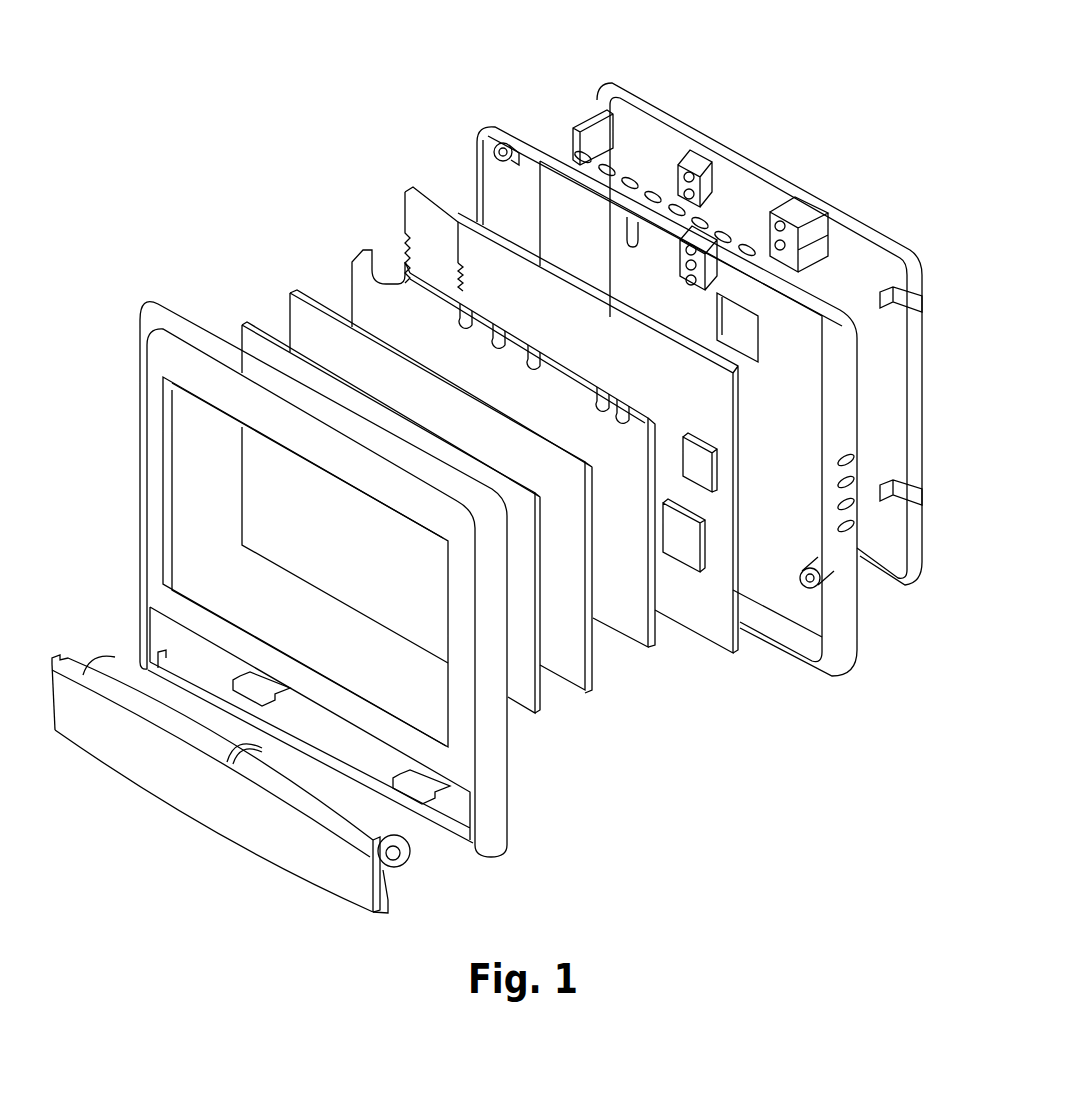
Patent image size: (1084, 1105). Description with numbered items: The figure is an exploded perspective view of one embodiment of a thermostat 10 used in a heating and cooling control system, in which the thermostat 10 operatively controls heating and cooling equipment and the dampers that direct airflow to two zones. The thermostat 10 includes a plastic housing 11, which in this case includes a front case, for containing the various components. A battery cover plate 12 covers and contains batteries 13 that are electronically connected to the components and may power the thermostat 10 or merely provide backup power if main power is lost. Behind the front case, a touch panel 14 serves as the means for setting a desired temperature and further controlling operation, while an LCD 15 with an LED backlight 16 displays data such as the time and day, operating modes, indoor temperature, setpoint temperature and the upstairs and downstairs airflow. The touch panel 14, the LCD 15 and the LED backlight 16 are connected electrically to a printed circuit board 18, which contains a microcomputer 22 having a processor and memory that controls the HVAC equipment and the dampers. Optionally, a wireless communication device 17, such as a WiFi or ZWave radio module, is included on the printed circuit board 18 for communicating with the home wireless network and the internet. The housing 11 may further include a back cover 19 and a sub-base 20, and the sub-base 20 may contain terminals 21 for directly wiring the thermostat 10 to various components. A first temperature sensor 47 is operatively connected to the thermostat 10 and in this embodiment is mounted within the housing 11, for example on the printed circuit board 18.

The thermostat 10 is at (205, 272).
The housing 11 is at (157, 355).
The battery cover plate 12 is at (137, 760).
The batteries 13 is at (307, 787).
The touch panel 14 is at (260, 458).
The LCD 15 is at (316, 338).
The LED backlight 16 is at (372, 290).
The wireless communication device 17 is at (428, 226).
The printed circuit board 18 is at (500, 283).
The back cover 19 is at (547, 150).
The sub-base 20 is at (627, 95).
The terminals 21 is at (697, 158).
The microcomputer 22 is at (680, 540).
The first temperature sensor 47 is at (697, 465).